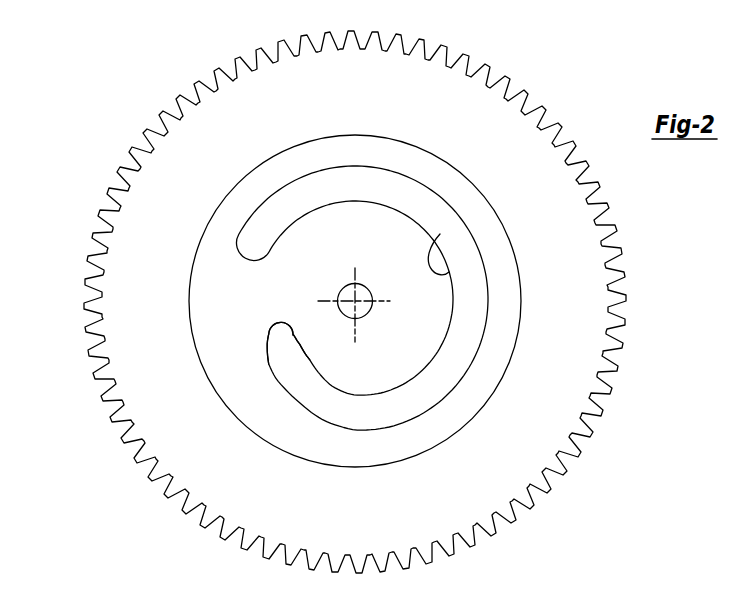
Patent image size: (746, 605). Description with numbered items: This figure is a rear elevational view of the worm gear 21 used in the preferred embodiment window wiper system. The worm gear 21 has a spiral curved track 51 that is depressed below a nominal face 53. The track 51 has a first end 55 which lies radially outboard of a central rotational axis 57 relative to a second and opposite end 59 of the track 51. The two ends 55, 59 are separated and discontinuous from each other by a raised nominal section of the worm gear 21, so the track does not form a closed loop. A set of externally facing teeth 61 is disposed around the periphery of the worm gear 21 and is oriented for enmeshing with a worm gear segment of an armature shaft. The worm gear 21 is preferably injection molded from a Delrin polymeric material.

The worm gear 21 is at (386, 294).
The spiral curved track 51 is at (440, 234).
The nominal face 53 is at (207, 286).
The first end 55 is at (246, 262).
The central rotational axis 57 is at (367, 313).
The second end 59 is at (270, 335).
The externally facing teeth 61 is at (617, 318).